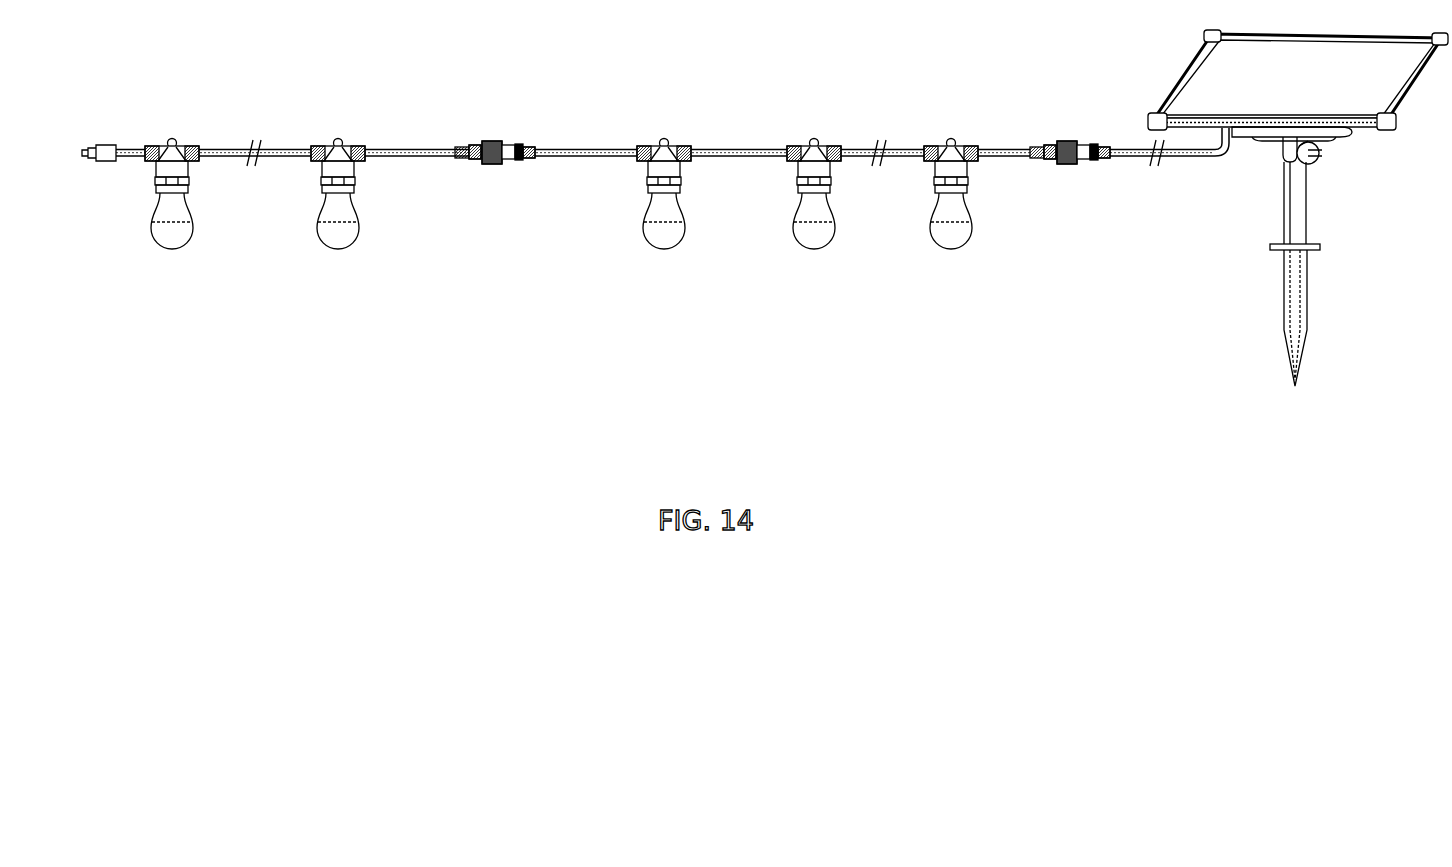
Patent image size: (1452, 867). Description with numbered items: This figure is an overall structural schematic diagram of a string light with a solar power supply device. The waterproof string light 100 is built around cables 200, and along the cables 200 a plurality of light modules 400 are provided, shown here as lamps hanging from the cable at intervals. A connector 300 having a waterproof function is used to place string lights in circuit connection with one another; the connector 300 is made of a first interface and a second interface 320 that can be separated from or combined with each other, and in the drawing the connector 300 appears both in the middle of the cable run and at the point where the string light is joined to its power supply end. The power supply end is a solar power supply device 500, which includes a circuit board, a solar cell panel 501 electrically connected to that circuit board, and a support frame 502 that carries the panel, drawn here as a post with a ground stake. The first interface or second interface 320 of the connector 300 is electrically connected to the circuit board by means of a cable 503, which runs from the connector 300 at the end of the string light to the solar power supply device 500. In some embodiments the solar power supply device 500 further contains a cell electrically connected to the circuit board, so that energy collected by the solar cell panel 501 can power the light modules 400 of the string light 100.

The string light 100 is at (609, 193).
The cables 200 is at (753, 148).
The connector 300 is at (795, 149).
The second interface 320 is at (1091, 166).
The light modules 400 is at (641, 252).
The solar power supply device 500 is at (1279, 198).
The solar cell panel 501 is at (1328, 50).
The support frame 502 is at (1310, 222).
The cable 503 is at (1187, 163).